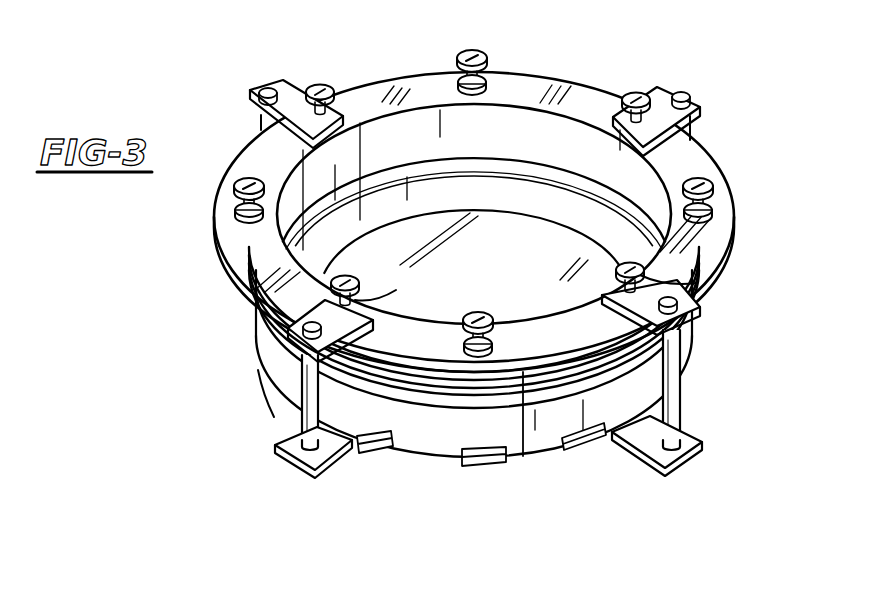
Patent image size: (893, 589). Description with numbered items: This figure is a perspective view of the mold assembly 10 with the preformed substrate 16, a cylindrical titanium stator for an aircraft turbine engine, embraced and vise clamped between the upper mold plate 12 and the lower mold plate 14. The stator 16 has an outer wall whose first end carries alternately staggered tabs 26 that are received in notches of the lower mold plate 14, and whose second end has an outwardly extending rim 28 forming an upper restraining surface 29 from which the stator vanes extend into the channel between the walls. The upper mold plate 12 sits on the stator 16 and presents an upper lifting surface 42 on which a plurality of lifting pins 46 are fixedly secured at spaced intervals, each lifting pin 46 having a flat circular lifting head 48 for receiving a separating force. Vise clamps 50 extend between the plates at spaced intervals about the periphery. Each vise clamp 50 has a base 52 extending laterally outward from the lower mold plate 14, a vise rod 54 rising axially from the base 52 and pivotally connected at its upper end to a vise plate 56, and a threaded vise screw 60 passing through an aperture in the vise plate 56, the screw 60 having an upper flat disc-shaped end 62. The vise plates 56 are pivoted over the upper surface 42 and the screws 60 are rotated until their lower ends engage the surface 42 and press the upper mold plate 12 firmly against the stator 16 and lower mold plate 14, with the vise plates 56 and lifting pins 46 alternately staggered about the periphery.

The mold assembly 10 is at (178, 84).
The upper mold plate 12 is at (222, 270).
The lower mold plate 14 is at (478, 465).
The preformed substrate 16 is at (416, 440).
The tabs 26 is at (546, 452).
The rim 28 is at (583, 448).
The upper restraining surface 29 is at (527, 410).
The upper lifting surface 42 is at (594, 100).
The lifting pins 46 is at (458, 80).
The lifting head 48 is at (476, 52).
The vise clamps 50 is at (262, 405).
The base 52 is at (280, 438).
The vise rod 54 is at (292, 426).
The vise plate 56 is at (292, 337).
The vise screw 60 is at (397, 291).
The upper flat disc-shaped end 62 is at (347, 273).